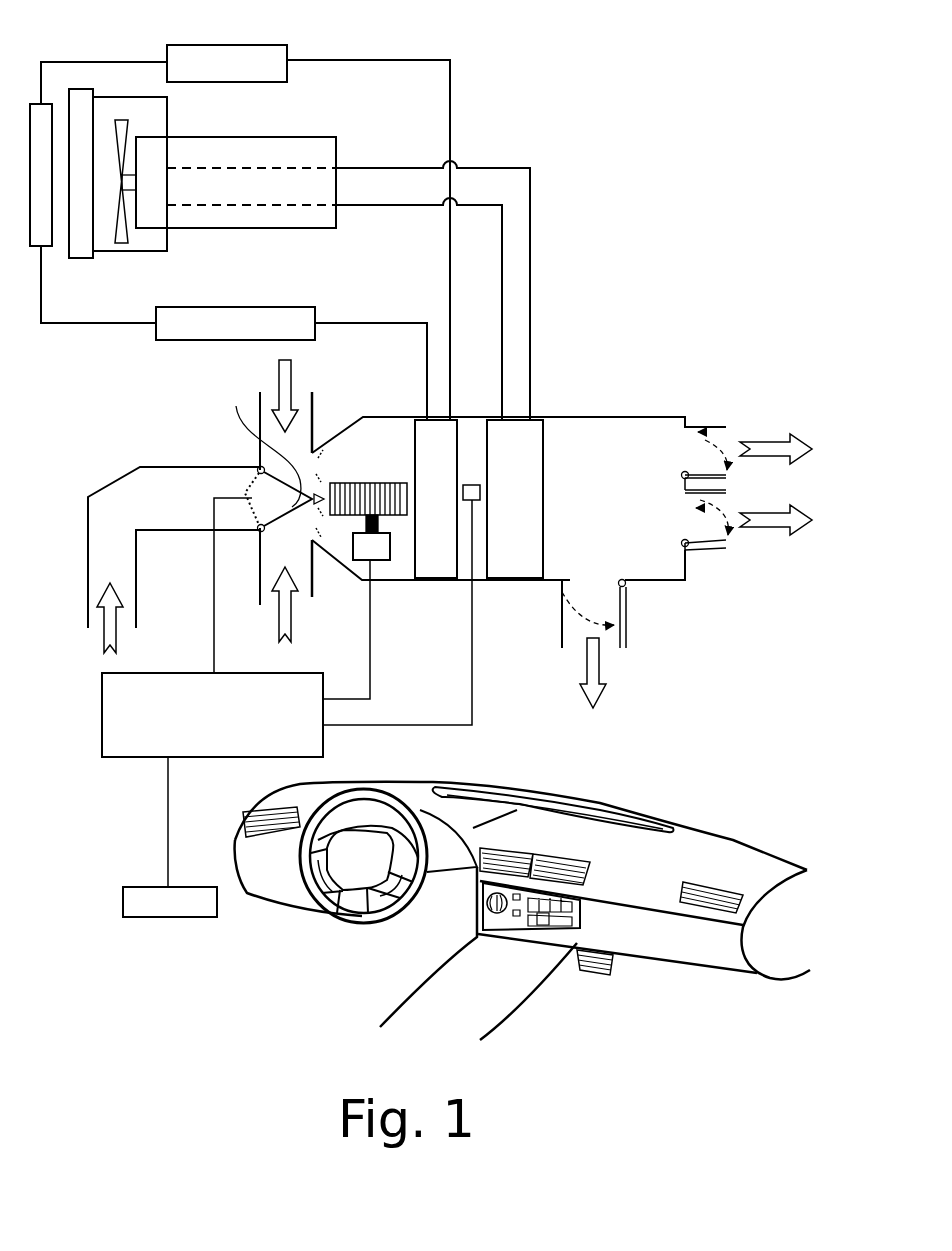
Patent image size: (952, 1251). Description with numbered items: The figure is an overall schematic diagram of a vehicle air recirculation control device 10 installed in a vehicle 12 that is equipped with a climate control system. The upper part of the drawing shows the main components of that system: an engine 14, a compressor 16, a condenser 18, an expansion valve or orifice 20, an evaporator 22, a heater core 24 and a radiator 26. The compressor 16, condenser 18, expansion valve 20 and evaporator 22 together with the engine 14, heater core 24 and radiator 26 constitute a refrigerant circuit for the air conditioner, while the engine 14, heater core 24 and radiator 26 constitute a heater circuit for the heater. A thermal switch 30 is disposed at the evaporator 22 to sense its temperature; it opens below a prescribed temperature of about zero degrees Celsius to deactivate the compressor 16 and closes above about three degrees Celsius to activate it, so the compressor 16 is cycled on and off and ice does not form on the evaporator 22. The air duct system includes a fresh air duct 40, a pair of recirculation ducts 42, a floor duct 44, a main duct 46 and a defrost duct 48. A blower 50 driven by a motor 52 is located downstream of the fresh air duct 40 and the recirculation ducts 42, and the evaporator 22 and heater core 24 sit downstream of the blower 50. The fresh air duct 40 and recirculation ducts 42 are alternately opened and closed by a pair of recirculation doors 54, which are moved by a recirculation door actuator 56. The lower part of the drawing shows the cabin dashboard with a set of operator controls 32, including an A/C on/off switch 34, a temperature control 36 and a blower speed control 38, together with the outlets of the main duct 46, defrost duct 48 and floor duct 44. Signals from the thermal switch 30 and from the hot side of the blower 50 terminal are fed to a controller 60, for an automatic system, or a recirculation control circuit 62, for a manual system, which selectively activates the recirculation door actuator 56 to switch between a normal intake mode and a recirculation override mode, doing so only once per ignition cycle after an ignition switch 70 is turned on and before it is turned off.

The vehicle air recirculation control device 10 is at (668, 378).
The vehicle 12 is at (636, 799).
The engine 14 is at (252, 137).
The compressor 16 is at (207, 45).
The condenser 18 is at (30, 125).
The expansion valve or orifice 20 is at (225, 307).
The evaporator 22 is at (415, 440).
The heater core 24 is at (545, 455).
The radiator 26 is at (80, 89).
The thermal switch 30 is at (472, 485).
The operator controls 32 is at (535, 952).
The A/C on/off switch 34 is at (517, 917).
The temperature control 36 is at (549, 927).
The blower or fan speed control 38 is at (483, 903).
The fresh air duct 40 is at (117, 564).
The recirculation ducts 42 is at (312, 395).
The floor duct 44 is at (627, 610).
The main duct 46 is at (730, 541).
The defrost duct 48 is at (700, 450).
The blower 50 is at (397, 515).
The motor 52 is at (378, 560).
The recirculation doors 54 is at (272, 458).
The recirculation door actuator 56 is at (245, 493).
The controller 60 is at (280, 727).
The recirculation control circuit 62 is at (323, 742).
The ignition switch 70 is at (217, 912).